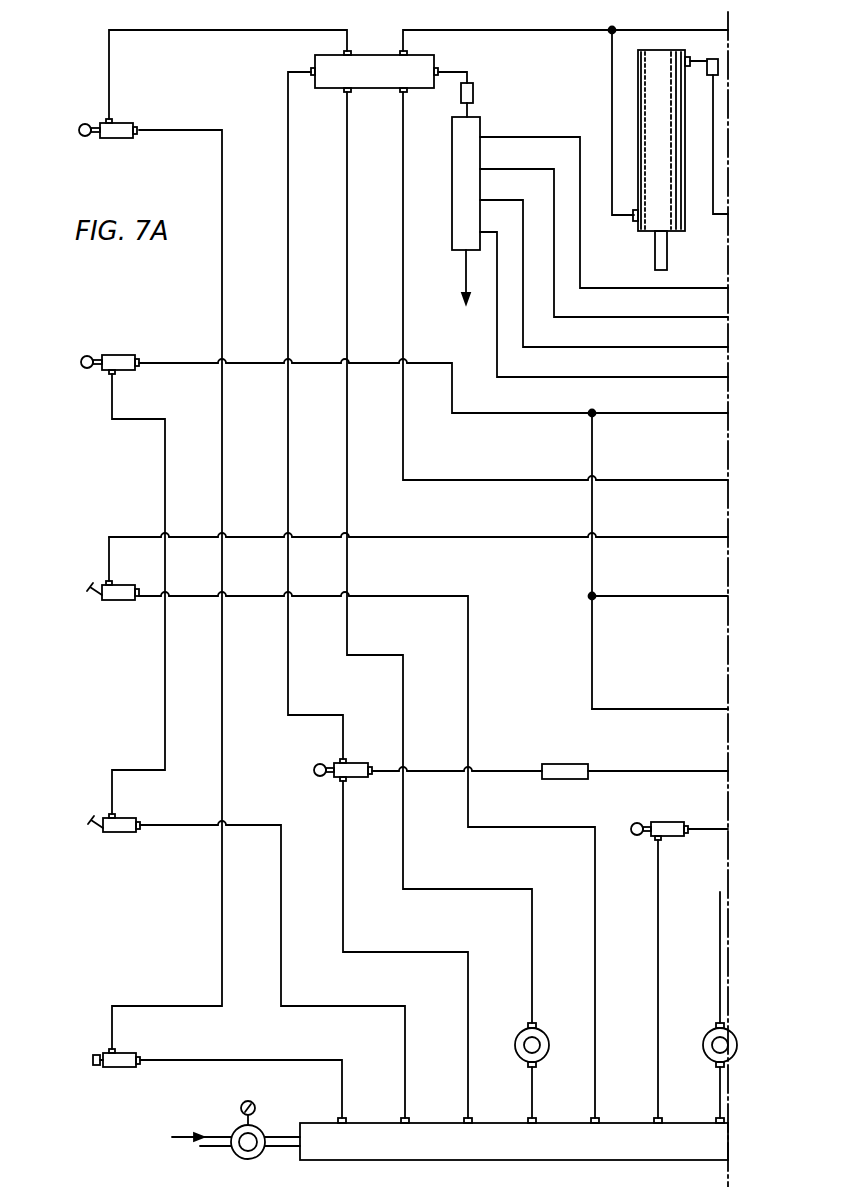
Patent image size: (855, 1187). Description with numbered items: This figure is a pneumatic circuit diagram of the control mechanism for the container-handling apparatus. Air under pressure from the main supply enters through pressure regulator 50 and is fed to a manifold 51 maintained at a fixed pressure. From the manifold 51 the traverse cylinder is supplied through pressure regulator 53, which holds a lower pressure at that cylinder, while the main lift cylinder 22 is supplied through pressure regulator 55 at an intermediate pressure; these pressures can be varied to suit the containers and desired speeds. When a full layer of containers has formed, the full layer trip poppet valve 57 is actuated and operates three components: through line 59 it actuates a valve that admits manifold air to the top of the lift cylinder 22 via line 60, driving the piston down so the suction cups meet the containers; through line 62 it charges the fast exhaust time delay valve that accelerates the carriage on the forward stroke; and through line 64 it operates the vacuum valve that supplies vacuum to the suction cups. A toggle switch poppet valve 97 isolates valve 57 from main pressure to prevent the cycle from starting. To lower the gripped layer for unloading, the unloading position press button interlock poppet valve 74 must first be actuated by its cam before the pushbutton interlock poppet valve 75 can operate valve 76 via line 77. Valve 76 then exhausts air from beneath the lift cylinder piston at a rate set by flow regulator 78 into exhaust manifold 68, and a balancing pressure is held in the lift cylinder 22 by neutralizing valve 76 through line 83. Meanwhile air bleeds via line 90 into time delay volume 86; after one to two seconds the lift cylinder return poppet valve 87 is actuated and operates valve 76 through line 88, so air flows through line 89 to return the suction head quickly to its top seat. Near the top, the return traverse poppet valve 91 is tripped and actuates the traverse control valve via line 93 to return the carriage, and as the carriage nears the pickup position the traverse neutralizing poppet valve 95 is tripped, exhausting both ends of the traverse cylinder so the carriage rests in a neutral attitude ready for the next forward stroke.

The main lift cylinder 22 is at (661, 160).
The pressure regulator 50 is at (236, 1141).
The manifold 51 is at (514, 1139).
The pressure regulator 53 is at (707, 1005).
The pressure regulator 55 is at (544, 1070).
The full layer trip poppet valve 57 is at (123, 573).
The line 59 is at (433, 534).
The line 60 is at (709, 149).
The line 62 is at (433, 845).
The line 64 is at (660, 698).
The exhaust manifold 68 is at (590, 247).
The unloading position press button interlock poppet valve 74 is at (108, 141).
The pushbutton interlock poppet valve 75 is at (217, 1083).
The valve 76 is at (421, 537).
The line 77 is at (228, 539).
The flow regulator 78 is at (468, 94).
The line 83 is at (565, 286).
The time delay volume 86 is at (565, 761).
The lift cylinder return poppet valve 87 is at (391, 938).
The line 88 is at (315, 415).
The line 89 is at (565, 121).
The line 90 is at (550, 760).
The return traverse poppet valve 91 is at (659, 958).
The line 93 is at (708, 820).
The traverse neutralizing poppet valve 95 is at (407, 578).
The toggle switch poppet valve 97 is at (246, 966).